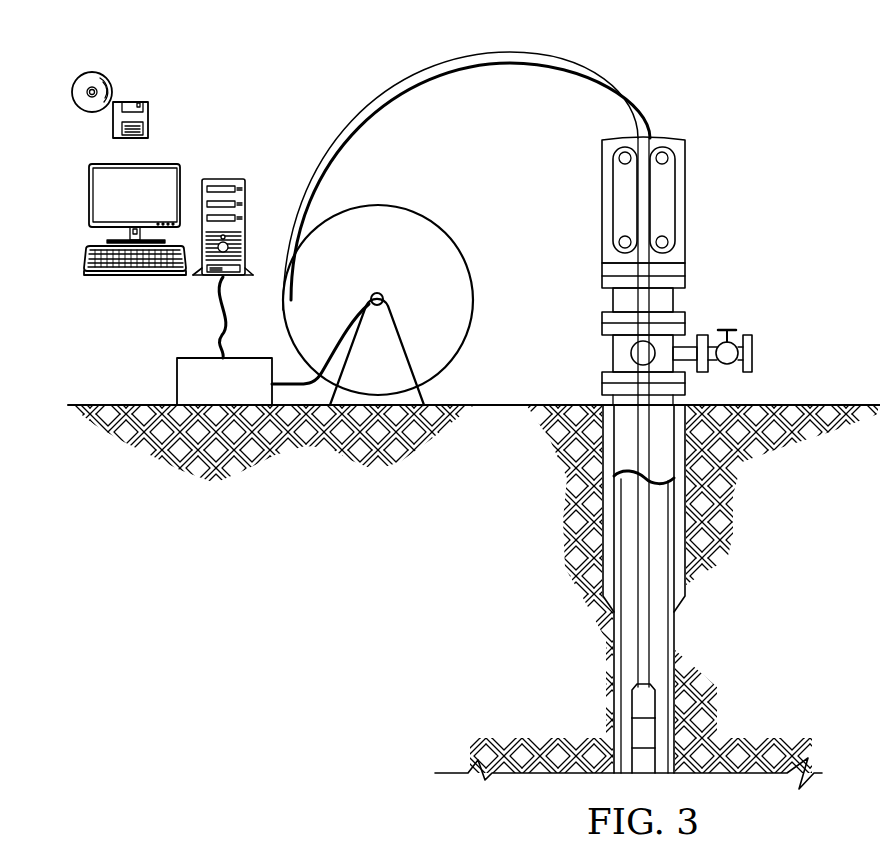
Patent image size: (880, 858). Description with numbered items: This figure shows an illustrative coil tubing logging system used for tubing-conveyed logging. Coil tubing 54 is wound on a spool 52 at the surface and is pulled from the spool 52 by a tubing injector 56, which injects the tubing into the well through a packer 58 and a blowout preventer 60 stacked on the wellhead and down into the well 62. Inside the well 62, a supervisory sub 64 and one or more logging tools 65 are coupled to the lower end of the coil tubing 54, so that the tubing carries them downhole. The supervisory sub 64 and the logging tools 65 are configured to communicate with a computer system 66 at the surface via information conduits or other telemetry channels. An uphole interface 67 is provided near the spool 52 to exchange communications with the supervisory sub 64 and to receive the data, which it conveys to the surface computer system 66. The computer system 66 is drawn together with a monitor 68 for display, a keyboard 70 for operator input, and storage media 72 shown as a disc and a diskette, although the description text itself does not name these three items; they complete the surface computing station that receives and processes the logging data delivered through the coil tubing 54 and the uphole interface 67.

The spool 52 is at (363, 263).
The coil tubing 54 is at (420, 69).
The tubing injector 56 is at (676, 200).
The packer 58 is at (675, 300).
The blowout preventer 60 is at (612, 353).
The well 62 is at (660, 457).
The supervisory sub 64 is at (638, 703).
The logging tools 65 is at (638, 737).
The computer system 66 is at (224, 179).
The uphole interface 67 is at (177, 387).
The monitor 68 is at (89, 195).
The keyboard 70 is at (85, 260).
The storage media 72 is at (128, 102).